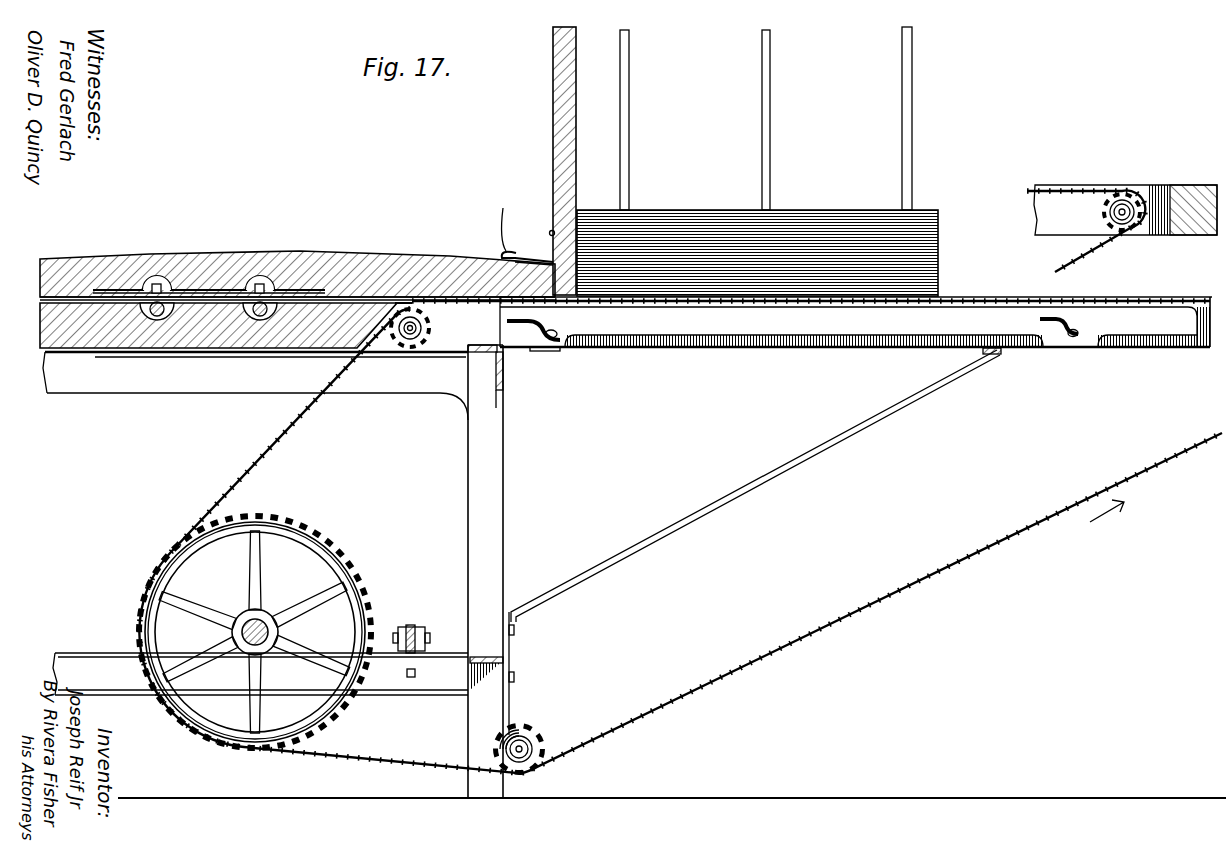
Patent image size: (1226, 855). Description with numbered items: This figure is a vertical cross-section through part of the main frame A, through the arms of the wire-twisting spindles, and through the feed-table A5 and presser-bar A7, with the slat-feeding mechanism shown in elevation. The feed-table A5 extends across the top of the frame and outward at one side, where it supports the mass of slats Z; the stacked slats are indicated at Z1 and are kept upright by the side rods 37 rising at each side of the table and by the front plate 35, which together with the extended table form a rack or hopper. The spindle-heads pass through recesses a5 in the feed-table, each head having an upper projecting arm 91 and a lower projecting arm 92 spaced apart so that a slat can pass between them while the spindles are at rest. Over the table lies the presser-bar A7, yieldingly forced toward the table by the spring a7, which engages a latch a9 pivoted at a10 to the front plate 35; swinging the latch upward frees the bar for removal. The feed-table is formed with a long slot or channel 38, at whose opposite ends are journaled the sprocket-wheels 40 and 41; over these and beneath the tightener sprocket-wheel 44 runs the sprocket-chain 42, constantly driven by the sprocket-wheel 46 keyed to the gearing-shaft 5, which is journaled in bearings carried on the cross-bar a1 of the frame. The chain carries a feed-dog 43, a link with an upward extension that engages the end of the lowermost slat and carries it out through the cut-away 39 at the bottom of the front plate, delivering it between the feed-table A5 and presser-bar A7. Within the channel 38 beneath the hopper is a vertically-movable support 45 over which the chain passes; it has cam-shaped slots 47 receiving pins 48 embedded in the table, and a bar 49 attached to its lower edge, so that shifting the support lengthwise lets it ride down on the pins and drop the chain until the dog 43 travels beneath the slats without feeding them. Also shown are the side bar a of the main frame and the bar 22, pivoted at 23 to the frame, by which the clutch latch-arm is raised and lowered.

The slats Z is at (113, 298).
The upper projecting arm 91 is at (158, 288).
The lower projecting arm 92 is at (187, 288).
The feed-table A5 is at (208, 312).
The presser-bar A7 is at (333, 268).
The recesses a5 is at (157, 316).
The feed-dog 43 is at (405, 296).
The spring a7 is at (462, 262).
The cut-away 39 is at (540, 258).
The latch a9 is at (503, 220).
The pivot a10 is at (551, 230).
The front plate 35 is at (576, 162).
The side rods 37 is at (629, 164).
The stack Z1 is at (822, 222).
The vertically-movable support 45 is at (856, 322).
The slot or channel 38 is at (684, 348).
The cam-shaped slots 47 is at (524, 347).
The pins 48 is at (545, 340).
The bar 49 is at (543, 356).
The sprocket-wheel 40 is at (437, 322).
The frame A is at (503, 520).
The cross-bar a1 is at (278, 674).
The bar 22 is at (412, 625).
The pivot 23 is at (430, 636).
The side bar a is at (513, 661).
The tightener sprocket-wheel 44 is at (531, 732).
The sprocket-wheel 46 is at (255, 632).
The gearing-shaft 5 is at (251, 620).
The sprocket-wheel 41 is at (1120, 192).
The sprocket-chain 42 is at (1138, 258).